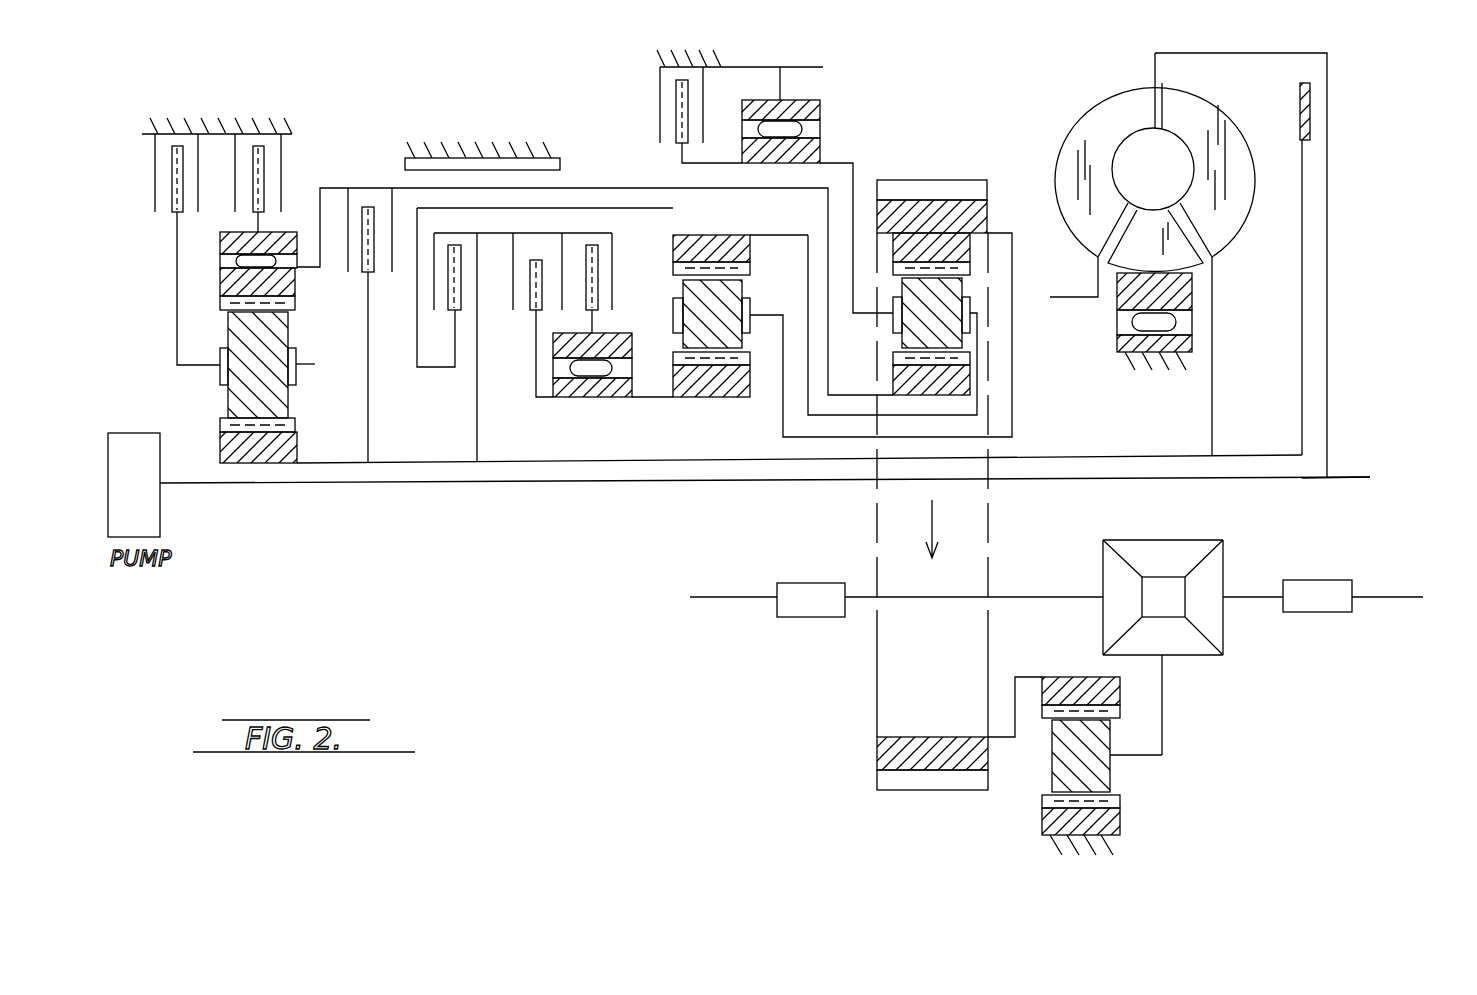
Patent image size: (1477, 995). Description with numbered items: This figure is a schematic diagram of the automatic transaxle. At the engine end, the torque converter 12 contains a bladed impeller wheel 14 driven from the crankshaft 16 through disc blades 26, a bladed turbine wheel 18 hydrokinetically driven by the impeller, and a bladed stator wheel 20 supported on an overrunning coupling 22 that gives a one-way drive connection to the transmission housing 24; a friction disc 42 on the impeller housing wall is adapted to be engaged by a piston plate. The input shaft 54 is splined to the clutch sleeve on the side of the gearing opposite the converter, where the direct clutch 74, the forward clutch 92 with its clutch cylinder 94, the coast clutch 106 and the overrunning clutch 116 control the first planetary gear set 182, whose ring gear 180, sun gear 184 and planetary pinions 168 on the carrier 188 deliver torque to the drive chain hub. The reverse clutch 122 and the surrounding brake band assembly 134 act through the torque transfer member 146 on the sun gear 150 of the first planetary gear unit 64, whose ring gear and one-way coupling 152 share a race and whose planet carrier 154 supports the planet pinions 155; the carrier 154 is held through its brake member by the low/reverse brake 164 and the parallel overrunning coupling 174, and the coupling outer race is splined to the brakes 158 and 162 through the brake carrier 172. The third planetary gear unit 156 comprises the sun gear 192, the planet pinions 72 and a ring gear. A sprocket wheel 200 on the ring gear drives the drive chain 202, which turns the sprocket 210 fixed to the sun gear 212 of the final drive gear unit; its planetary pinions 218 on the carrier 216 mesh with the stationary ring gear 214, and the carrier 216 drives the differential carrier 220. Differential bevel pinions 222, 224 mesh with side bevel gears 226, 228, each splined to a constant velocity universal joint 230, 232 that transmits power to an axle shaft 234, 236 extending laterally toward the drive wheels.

The torque converter 12 is at (1100, 80).
The bladed impeller wheel 14 is at (1155, 172).
The crankshaft 16 is at (1352, 478).
The bladed turbine wheel 18 is at (1160, 181).
The bladed stator wheel 20 is at (1155, 241).
The overrunning coupling 22 is at (1193, 328).
The transmission housing 24 is at (226, 125).
The disc blades 26 is at (1327, 107).
The friction disc 42 is at (1300, 100).
The input shaft 54 is at (610, 465).
The first planetary gear unit 64 is at (1002, 330).
The planet pinions 72 is at (268, 413).
The direct clutch 74 is at (432, 298).
The forward clutch 92 is at (599, 248).
The clutch cylinder 94 is at (493, 245).
The friction coast clutch 106 is at (527, 298).
The overrunning clutch 116 is at (582, 384).
The reverse clutch 122 is at (348, 256).
The brake band assembly 134 is at (555, 162).
The torque transfer member 146 is at (602, 188).
The sun gear 150 is at (230, 282).
The one-way coupling 152 is at (235, 262).
The planet carrier 154 is at (862, 316).
The planet pinions 155 is at (946, 292).
The third planetary gear unit 156 is at (200, 411).
The brake 158 is at (283, 160).
The brake 162 is at (155, 178).
The low/reverse brake 164 is at (660, 97).
The planetary pinions 168 is at (700, 294).
The brake carrier 172 is at (180, 366).
The overrunning coupling 174 is at (812, 131).
The ring gear 180 is at (694, 242).
The first planetary gear set 182 is at (762, 231).
The sun gear 184 is at (692, 384).
The carrier 188 is at (768, 310).
The sun gear 192 is at (250, 447).
The sprocket wheel 200 is at (910, 216).
The drive chain 202 is at (876, 708).
The sprocket 210 is at (887, 753).
The sun gear 212 is at (1057, 686).
The ring gear 214 is at (1120, 829).
The carrier 216 is at (1147, 756).
The planetary pinions 218 is at (1100, 774).
The differential carrier 220 is at (1163, 711).
The differential bevel pinion 222 is at (1190, 644).
The differential bevel pinion 224 is at (1140, 550).
The side bevel gear 226 is at (1227, 562).
The side bevel gear 228 is at (1108, 565).
The constant velocity universal joint 230 is at (1323, 607).
The constant velocity universal joint 232 is at (790, 613).
The axle shaft 234 is at (1405, 600).
The axle shaft 236 is at (720, 600).